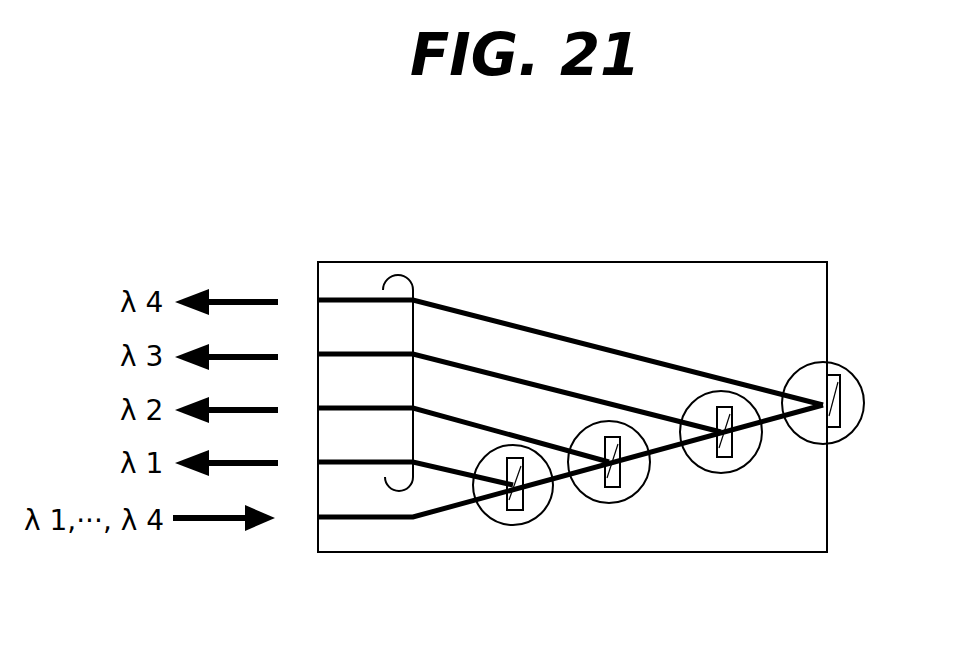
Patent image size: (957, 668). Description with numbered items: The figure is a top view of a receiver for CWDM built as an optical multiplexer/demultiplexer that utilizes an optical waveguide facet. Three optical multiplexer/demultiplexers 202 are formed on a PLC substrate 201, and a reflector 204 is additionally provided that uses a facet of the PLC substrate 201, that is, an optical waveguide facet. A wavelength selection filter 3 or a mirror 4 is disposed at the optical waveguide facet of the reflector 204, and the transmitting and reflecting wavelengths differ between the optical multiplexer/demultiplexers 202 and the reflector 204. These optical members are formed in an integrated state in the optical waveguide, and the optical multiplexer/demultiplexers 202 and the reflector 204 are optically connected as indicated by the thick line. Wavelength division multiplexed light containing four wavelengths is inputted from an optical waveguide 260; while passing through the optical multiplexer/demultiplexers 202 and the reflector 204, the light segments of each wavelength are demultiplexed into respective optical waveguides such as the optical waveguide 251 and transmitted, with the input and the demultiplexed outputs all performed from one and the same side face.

The PLC substrate 201 is at (350, 278).
The optical waveguide 251 is at (418, 286).
The optical waveguide 260 is at (367, 520).
The optical multiplexer/demultiplexer 202 is at (533, 525).
The reflector 204 is at (838, 441).
The wavelength selection filter 3 is at (516, 456).
The mirror 4 is at (830, 376).